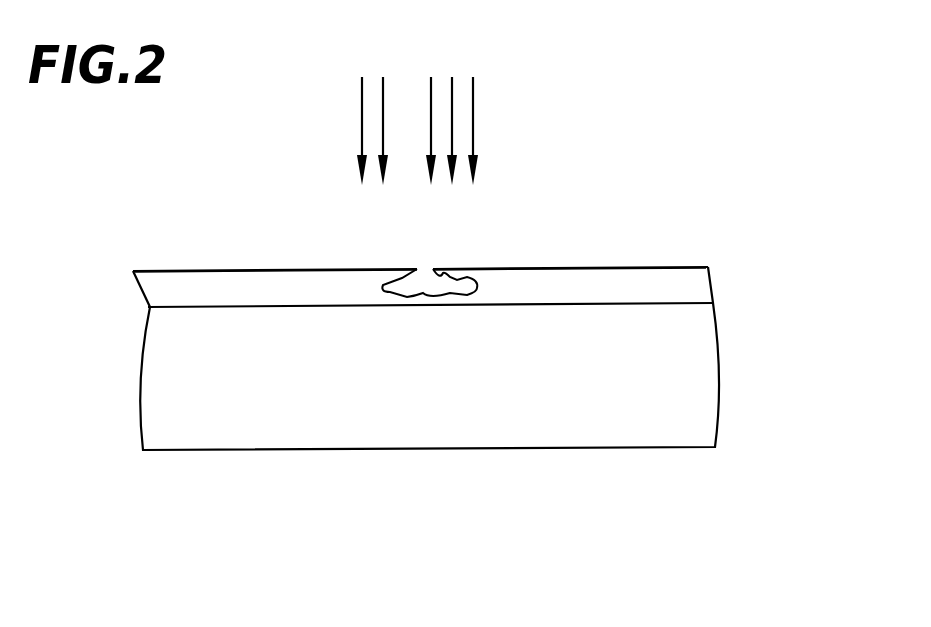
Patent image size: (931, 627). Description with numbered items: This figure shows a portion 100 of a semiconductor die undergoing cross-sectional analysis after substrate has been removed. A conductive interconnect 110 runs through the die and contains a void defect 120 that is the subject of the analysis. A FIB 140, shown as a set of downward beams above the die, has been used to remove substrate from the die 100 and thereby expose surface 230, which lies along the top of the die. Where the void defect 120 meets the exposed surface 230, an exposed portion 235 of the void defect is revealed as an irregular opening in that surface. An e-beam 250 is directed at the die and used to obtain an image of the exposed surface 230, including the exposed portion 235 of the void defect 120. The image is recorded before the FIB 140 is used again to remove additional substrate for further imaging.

The portion of semiconductor die 100 is at (547, 503).
The conductive interconnect 110 is at (687, 282).
The void defect 120 is at (432, 287).
The FIB 140 is at (480, 123).
The exposed surface 230 is at (617, 267).
The exposed portion of void defect 235 is at (423, 268).
The e-beam 250 is at (362, 123).